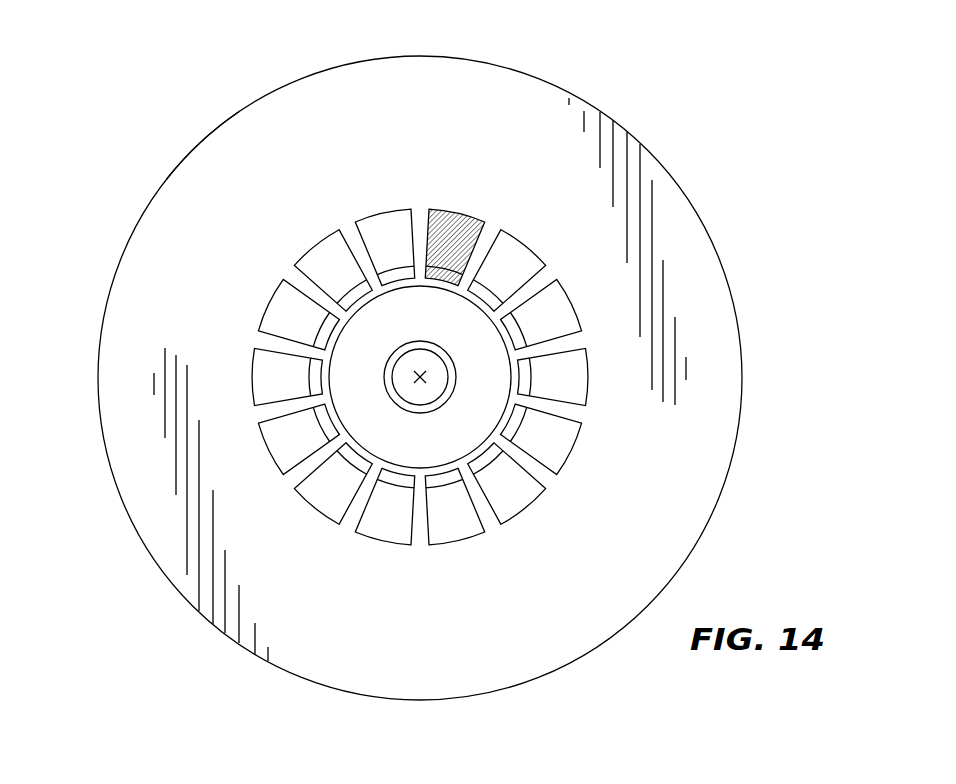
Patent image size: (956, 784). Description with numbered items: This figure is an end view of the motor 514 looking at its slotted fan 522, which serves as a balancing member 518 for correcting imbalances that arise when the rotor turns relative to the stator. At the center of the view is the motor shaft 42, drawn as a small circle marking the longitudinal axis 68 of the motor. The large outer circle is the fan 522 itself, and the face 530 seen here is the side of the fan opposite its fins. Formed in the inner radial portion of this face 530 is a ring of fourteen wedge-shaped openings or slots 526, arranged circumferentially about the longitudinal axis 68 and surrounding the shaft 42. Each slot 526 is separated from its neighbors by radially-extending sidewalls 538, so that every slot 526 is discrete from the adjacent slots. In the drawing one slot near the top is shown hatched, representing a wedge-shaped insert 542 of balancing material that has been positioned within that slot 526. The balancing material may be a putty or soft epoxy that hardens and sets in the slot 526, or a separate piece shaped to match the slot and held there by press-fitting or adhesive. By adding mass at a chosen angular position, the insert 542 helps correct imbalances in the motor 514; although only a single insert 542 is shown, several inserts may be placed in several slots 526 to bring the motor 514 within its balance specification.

The motor 514 is at (624, 72).
The balancing member 518 is at (119, 563).
The slotted fan 522 is at (203, 162).
The slots 526 is at (510, 267).
The face 530 is at (667, 247).
The radially-extending sidewalls 538 is at (562, 402).
The wedge-shaped insert 542 is at (450, 228).
The longitudinal axis 68 is at (418, 388).
The motor shaft 42 is at (430, 390).